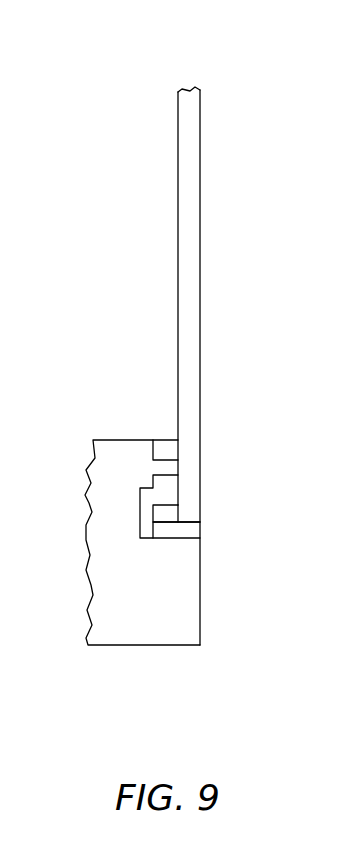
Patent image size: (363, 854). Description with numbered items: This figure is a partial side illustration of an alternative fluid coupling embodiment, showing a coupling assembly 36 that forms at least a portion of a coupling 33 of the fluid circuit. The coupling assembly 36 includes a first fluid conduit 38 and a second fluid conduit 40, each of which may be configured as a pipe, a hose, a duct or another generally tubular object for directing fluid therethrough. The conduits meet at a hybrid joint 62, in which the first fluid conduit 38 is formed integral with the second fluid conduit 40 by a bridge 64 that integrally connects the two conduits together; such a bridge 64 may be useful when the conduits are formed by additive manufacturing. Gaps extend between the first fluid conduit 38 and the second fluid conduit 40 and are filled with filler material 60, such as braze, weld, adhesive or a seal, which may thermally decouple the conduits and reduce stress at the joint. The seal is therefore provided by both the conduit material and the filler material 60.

The coupling 33 is at (183, 384).
The coupling assembly 36 is at (243, 107).
The first fluid conduit 38 is at (204, 217).
The second fluid conduit 40 is at (127, 652).
The filler material 60 is at (172, 452).
The hybrid joint 62 is at (212, 524).
The bridge 64 is at (162, 466).